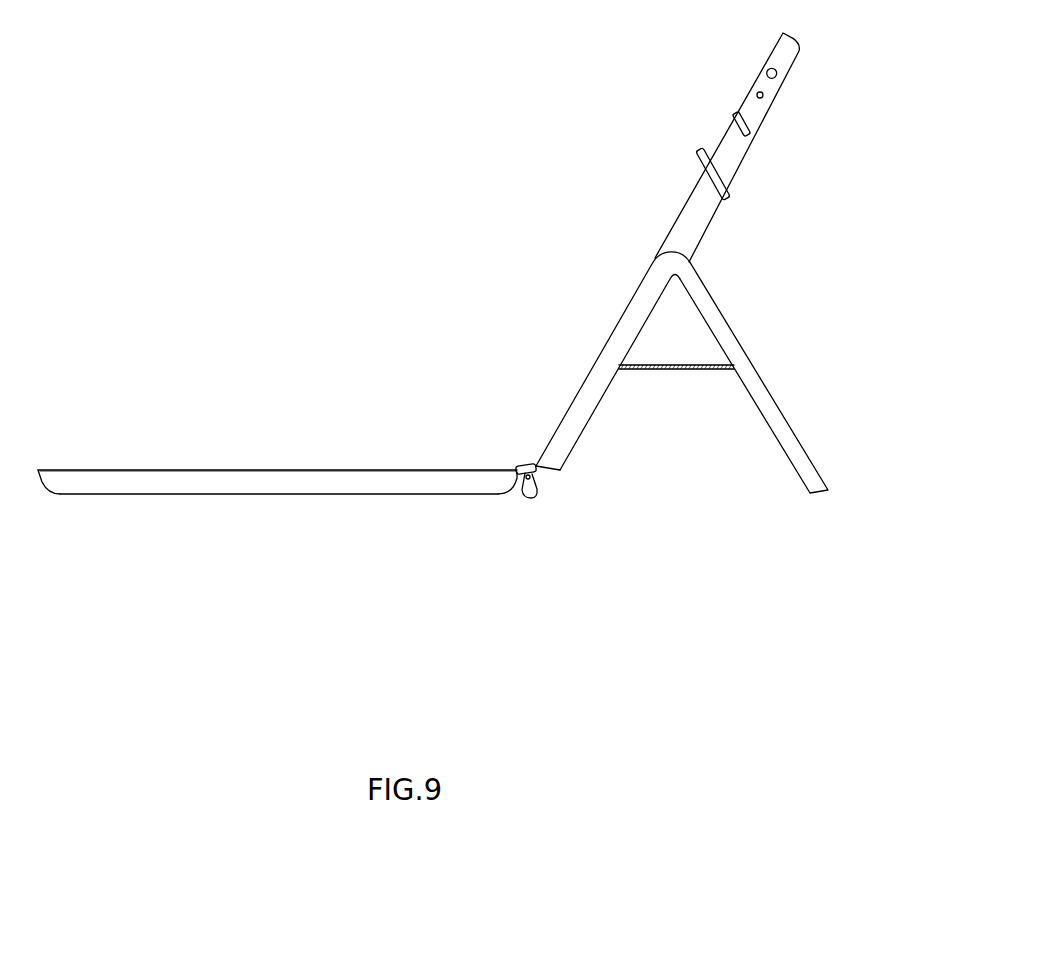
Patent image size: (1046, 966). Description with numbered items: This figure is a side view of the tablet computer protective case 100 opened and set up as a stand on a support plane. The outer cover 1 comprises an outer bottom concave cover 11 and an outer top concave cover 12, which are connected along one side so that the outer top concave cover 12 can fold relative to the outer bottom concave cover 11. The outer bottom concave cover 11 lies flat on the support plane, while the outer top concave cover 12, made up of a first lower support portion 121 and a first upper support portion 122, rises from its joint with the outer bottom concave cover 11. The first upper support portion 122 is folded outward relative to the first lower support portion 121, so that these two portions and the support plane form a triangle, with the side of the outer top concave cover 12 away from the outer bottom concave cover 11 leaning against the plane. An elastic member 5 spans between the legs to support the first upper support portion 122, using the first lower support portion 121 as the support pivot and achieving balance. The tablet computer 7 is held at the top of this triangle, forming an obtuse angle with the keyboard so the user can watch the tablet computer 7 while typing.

The tablet computer protective case 100 is at (348, 239).
The outer cover 1 is at (160, 495).
The outer bottom concave cover 11 is at (338, 482).
The outer top concave cover 12 is at (682, 423).
The first lower support portion 121 is at (562, 432).
The first upper support portion 122 is at (754, 391).
The elastic member 5 is at (680, 366).
The tablet computer 7 is at (745, 100).